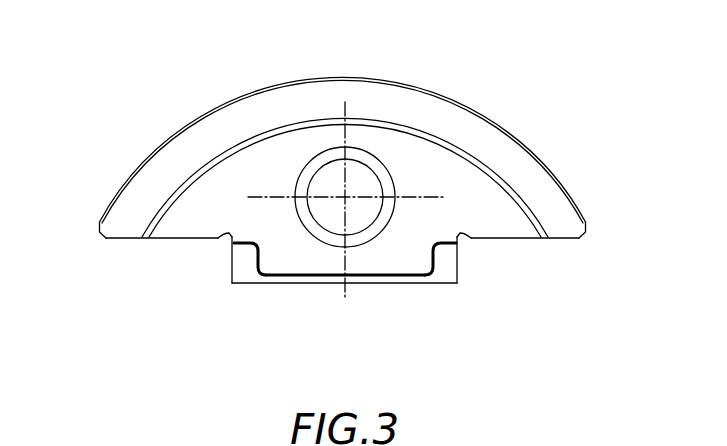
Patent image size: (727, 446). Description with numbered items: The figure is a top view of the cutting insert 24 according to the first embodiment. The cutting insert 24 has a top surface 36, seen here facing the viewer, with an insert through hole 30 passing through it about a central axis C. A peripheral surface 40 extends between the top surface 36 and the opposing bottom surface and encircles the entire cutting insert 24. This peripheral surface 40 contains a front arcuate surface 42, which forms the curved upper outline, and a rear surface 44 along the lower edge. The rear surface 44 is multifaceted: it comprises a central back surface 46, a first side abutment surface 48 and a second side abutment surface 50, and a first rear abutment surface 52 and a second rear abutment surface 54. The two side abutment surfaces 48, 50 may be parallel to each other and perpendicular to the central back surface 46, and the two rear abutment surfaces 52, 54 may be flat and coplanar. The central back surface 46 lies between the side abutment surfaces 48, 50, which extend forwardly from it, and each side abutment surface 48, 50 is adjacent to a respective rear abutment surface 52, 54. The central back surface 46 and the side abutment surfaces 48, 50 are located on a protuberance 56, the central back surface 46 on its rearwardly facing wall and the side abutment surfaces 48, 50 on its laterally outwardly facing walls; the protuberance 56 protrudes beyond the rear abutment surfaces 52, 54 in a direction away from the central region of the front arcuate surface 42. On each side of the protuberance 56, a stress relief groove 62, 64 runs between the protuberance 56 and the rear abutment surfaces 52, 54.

The cutting insert 24 is at (253, 60).
The peripheral surface 40 is at (218, 108).
The front arcuate surface 42 is at (135, 174).
The top surface 36 is at (418, 175).
The insert through hole 30 is at (372, 160).
The central axis C is at (339, 193).
The first rear abutment surface 52 is at (167, 239).
The second rear abutment surface 54 is at (524, 239).
The stress relief groove 62 is at (228, 239).
The stress relief groove 64 is at (458, 240).
The first side abutment surface 48 is at (231, 264).
The second side abutment surface 50 is at (460, 265).
The rear surface 44 is at (300, 286).
The central back surface 46 is at (358, 286).
The protuberance 56 is at (386, 250).